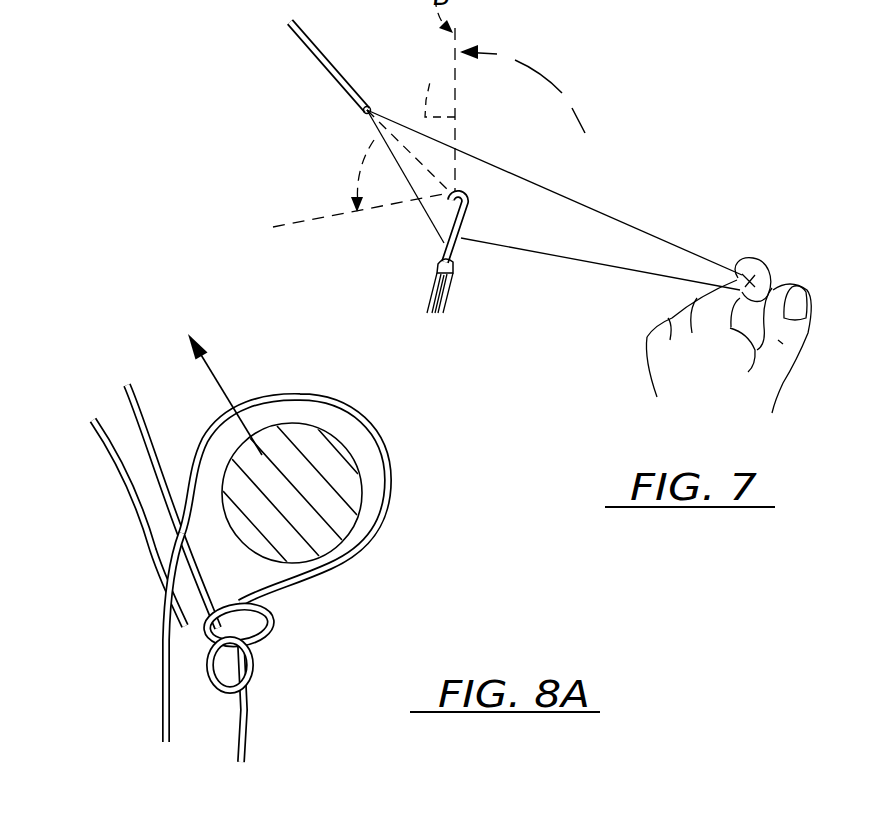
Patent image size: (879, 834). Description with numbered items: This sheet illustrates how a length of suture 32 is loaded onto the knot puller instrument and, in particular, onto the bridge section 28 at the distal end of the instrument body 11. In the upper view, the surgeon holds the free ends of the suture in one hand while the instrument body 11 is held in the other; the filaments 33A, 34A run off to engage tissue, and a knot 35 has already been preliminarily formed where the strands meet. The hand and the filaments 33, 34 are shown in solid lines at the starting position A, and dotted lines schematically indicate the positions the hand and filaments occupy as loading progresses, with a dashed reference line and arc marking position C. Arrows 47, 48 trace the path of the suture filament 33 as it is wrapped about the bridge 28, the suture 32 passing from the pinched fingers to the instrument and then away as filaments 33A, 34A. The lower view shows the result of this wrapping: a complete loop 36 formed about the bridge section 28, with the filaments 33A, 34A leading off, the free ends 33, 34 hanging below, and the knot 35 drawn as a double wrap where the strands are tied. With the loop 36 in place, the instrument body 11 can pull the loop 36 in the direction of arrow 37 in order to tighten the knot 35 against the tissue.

In FIG. 7, the instrument body 11 is at (450, 302).
In FIG. 8A, the bridge section 28 is at (338, 467).
In FIG. 7, the suture 32 is at (588, 210).
In FIG. 8A, the filament 33 is at (247, 748).
In FIG. 7, the filament 33A is at (307, 36).
In FIG. 8A, the filament 33A is at (138, 397).
In FIG. 8A, the filament 34 is at (157, 682).
In FIG. 7, the filament 34A is at (302, 50).
In FIG. 8A, the filament 34A is at (102, 458).
In FIG. 7, the knot 35 is at (362, 114).
In FIG. 8A, the knot 35 is at (277, 628).
In FIG. 8A, the loop 36 is at (370, 547).
In FIG. 8A, the arrow 37 is at (220, 380).
In FIG. 7, the arrow 47 is at (570, 75).
In FIG. 7, the arrow 48 is at (423, 91).
In FIG. 7, the starting position A is at (752, 258).
In FIG. 7, the position C is at (304, 208).